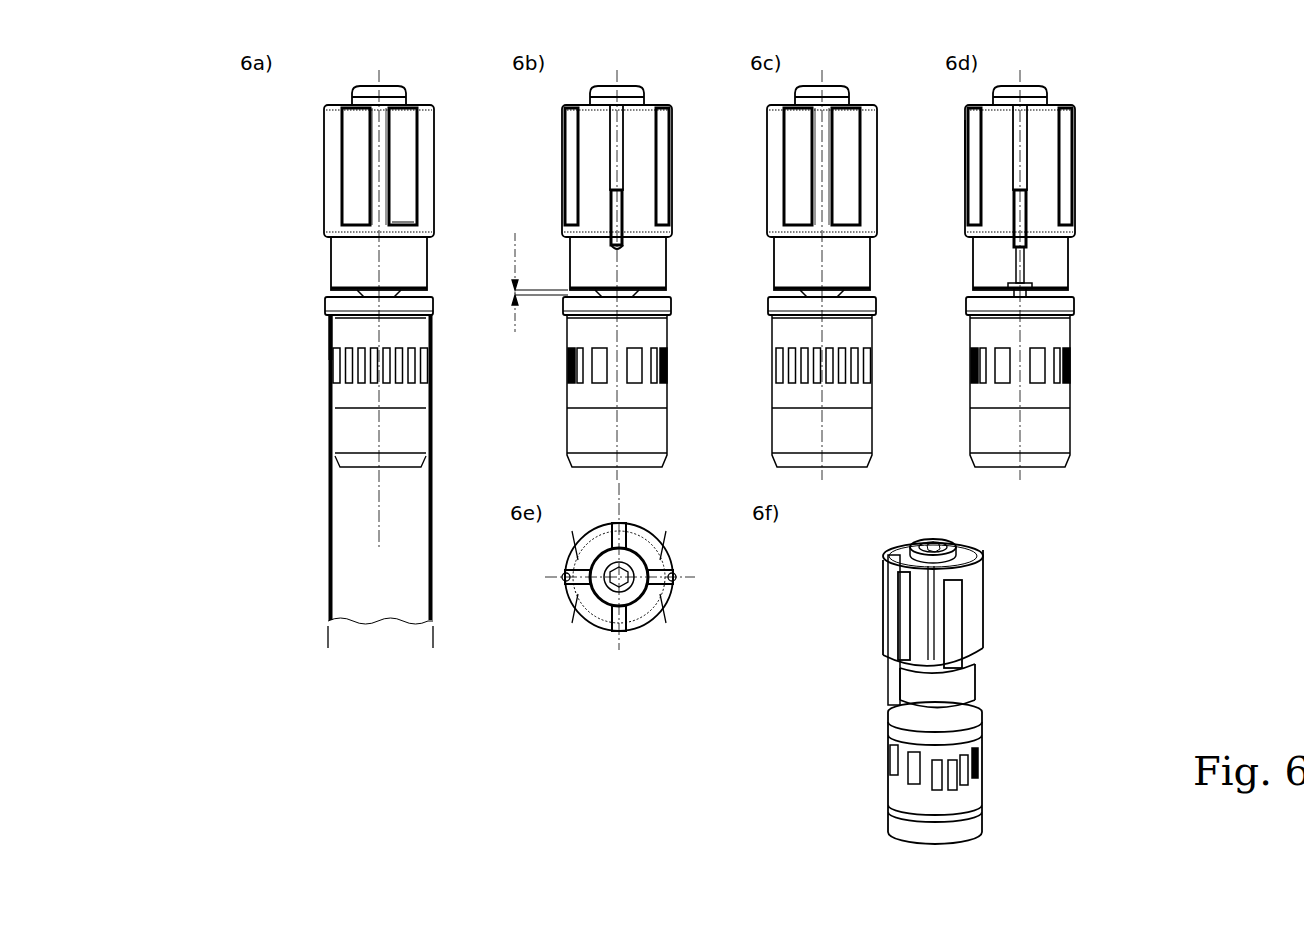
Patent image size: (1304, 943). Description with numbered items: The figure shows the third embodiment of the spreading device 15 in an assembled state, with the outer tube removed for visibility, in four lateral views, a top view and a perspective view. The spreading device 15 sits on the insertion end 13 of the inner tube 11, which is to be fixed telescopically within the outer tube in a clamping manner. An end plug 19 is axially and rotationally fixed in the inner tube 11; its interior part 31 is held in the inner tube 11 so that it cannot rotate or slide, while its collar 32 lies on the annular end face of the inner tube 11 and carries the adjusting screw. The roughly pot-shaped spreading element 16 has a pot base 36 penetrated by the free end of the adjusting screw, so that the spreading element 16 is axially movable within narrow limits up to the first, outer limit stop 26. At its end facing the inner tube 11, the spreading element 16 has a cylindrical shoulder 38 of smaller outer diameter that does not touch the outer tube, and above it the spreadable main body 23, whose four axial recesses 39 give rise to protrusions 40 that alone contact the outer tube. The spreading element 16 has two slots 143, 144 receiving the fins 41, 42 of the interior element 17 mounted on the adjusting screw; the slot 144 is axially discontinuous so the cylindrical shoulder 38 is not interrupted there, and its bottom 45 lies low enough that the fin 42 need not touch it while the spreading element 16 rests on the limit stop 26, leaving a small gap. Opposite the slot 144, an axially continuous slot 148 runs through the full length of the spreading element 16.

The inner tube 11 is at (328, 537).
The insertion end of inner tube 13 is at (328, 348).
The spreading device 15 is at (268, 234).
The spreading element 16 is at (425, 178).
The interior element 17 is at (1026, 275).
The end plug 19 is at (368, 395).
The main body 23 is at (405, 212).
The first outer limit stop 26 is at (392, 90).
The interior part 31 is at (415, 405).
The collar 32 is at (358, 310).
The pot base 36 is at (1048, 108).
The cylindrical shoulder 38 is at (407, 272).
The axial recesses 39 is at (408, 148).
The protrusions 40 is at (376, 142).
The fin 41 is at (1024, 230).
The fin 42 is at (628, 230).
The bottom of slot 45 is at (625, 248).
The slot 143 is at (1023, 145).
The slot 144 is at (619, 140).
The axially continuous slot 148 is at (1026, 262).